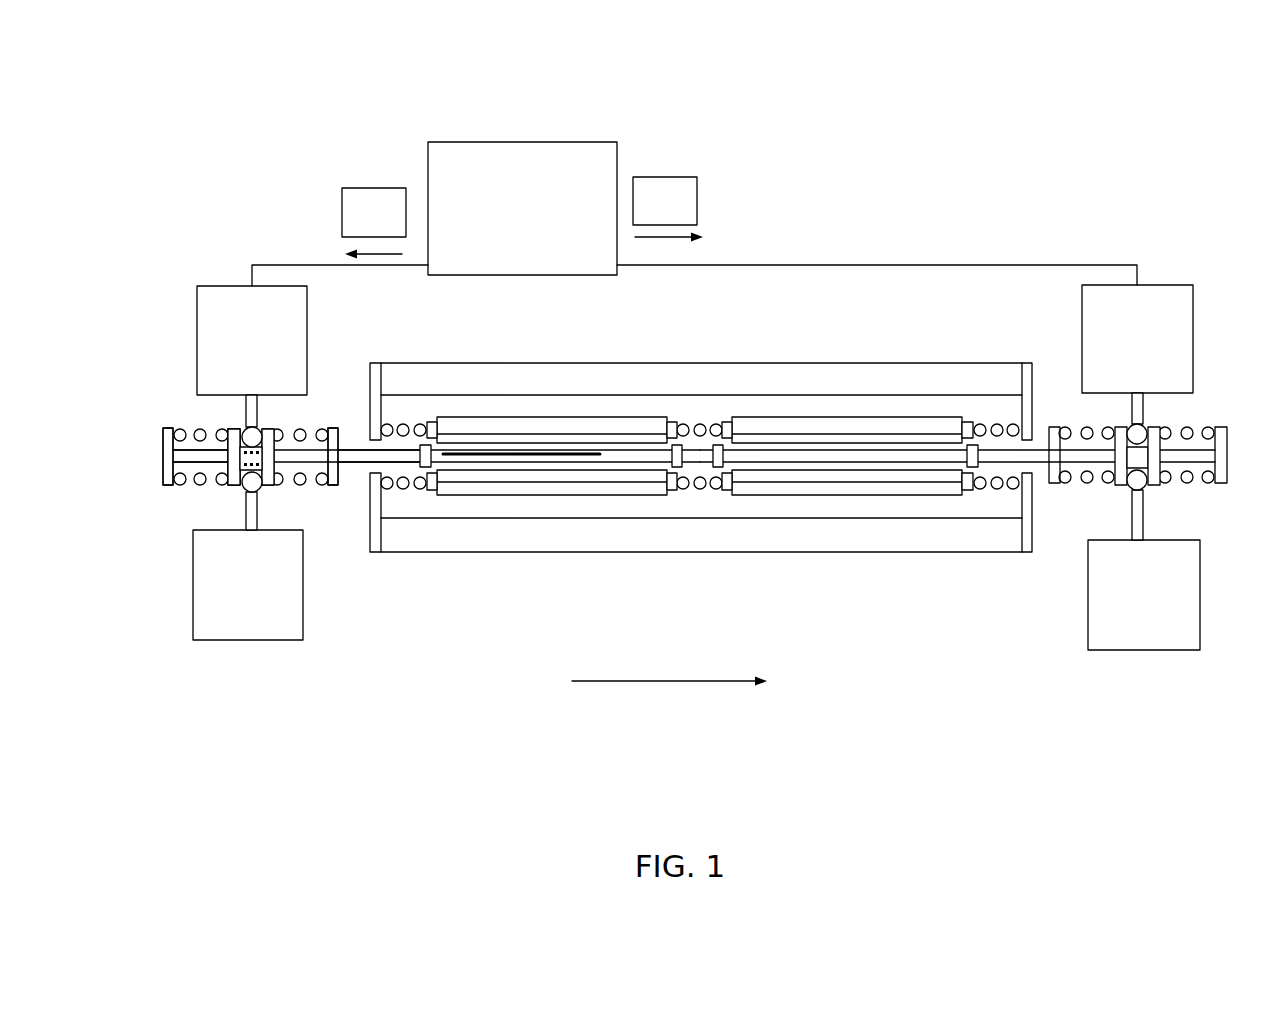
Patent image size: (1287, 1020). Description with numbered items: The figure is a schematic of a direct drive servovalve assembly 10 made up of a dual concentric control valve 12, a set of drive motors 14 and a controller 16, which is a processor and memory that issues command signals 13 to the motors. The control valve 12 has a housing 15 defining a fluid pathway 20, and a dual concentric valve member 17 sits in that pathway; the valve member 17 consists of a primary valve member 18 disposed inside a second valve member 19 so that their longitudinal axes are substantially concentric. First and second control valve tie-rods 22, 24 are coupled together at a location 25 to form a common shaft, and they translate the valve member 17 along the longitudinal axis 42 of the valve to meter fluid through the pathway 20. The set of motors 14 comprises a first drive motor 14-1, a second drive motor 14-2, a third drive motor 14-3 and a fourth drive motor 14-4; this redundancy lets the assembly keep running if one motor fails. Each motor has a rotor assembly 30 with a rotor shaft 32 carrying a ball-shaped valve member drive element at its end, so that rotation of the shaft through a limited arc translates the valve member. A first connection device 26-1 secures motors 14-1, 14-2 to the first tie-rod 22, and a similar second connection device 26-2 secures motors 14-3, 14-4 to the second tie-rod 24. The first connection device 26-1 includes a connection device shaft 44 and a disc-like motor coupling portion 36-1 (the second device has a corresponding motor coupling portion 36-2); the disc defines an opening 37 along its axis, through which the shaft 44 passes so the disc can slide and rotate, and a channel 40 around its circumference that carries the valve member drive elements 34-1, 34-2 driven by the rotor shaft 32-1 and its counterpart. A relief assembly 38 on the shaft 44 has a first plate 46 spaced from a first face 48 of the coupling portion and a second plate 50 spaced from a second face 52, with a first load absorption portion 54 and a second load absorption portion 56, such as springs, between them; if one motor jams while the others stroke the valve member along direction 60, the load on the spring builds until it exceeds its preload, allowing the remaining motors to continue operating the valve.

The direct drive servovalve assembly 10 is at (925, 207).
The dual concentric control valve 12 is at (805, 357).
The command signals 13 is at (361, 220).
The set of drive motors 14 is at (1115, 243).
The first drive motor 14-1 is at (213, 367).
The second drive motor 14-2 is at (211, 609).
The third drive motor 14-3 is at (1098, 367).
The fourth drive motor 14-4 is at (1106, 622).
The housing 15 is at (468, 362).
The controller 16 is at (469, 174).
The dual concentric valve member 17 is at (713, 415).
The primary valve member 18 is at (895, 445).
The second valve member 19 is at (833, 427).
The fluid pathway 20 is at (697, 495).
The first control valve tie-rod 22 is at (367, 450).
The second control valve tie-rod 24 is at (1037, 450).
The location 25 is at (692, 440).
The first connection device 26-1 is at (152, 500).
The second connection device 26-2 is at (1112, 485).
The rotor assembly 30 is at (1168, 408).
The rotor shaft 32 is at (165, 287).
The rotor shaft of the first drive motor 32-1 is at (242, 448).
The first valve member drive element 34-1 is at (259, 428).
The second valve member drive element 34-2 is at (247, 490).
The motor coupling portion 36-1 is at (277, 492).
The motor coupling portion 36-2 is at (1120, 500).
The opening 37 is at (227, 445).
The relief assembly 38 is at (337, 505).
The channel 40 is at (245, 486).
The longitudinal axis 42 is at (565, 454).
The connection device shaft 44 is at (197, 455).
The first plate 46 is at (162, 438).
The first face 48 is at (223, 443).
The second plate 50 is at (338, 463).
The second face 52 is at (277, 440).
The first load absorption portion 54 is at (202, 485).
The second load absorption portion 56 is at (303, 485).
The direction 60 is at (653, 681).